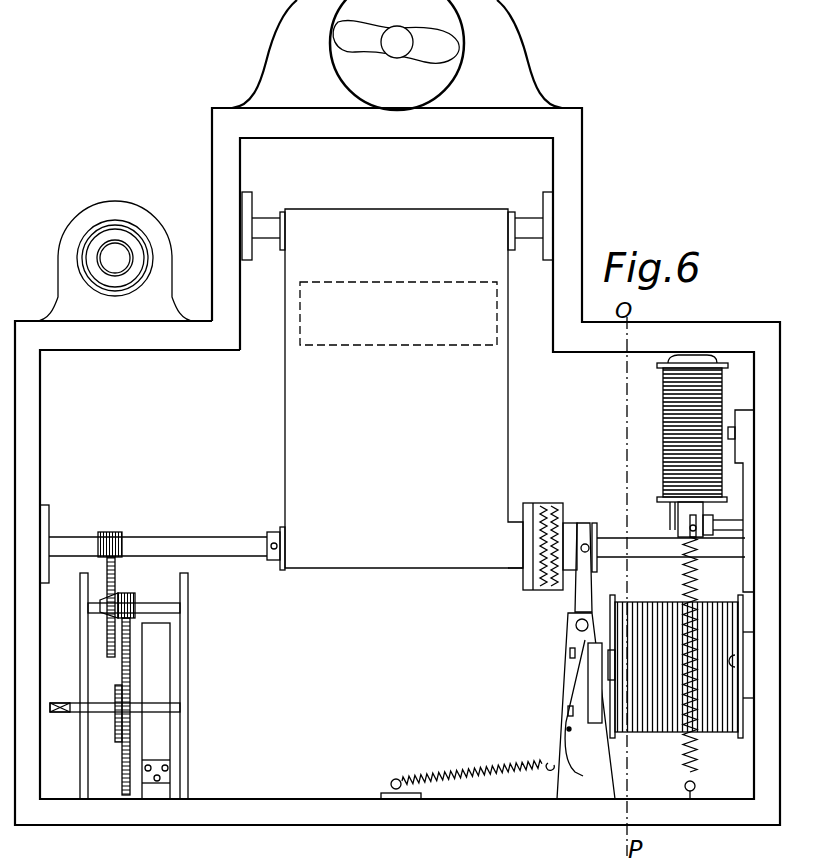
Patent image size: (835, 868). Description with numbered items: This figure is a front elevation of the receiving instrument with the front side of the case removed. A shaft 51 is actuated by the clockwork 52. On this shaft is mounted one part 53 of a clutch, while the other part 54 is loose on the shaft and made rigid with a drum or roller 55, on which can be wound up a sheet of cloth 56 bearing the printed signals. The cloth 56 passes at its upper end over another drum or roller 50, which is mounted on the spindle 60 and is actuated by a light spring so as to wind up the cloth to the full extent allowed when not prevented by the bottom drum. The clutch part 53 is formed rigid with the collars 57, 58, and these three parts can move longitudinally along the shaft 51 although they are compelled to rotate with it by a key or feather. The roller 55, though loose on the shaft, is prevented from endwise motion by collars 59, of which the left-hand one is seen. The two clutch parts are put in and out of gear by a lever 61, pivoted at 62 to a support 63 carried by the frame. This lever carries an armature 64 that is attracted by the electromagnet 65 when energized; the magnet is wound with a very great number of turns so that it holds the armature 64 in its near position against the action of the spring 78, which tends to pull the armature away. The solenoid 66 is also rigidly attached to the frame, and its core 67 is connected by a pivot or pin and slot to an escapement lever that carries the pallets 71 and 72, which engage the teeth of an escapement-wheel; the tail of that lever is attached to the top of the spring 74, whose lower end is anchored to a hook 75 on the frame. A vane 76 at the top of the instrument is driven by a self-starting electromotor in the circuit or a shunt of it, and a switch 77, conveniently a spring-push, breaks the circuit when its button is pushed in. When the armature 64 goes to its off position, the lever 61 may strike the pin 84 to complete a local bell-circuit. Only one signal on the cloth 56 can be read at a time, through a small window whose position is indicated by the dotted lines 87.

The upper drum or roller 50 is at (286, 232).
The shaft 51 is at (220, 546).
The clockwork 52 is at (125, 598).
The clutch part 53 is at (557, 506).
The clutch part 54 is at (540, 506).
The drum or roller 55 is at (520, 566).
The sheet of cloth 56 is at (404, 388).
The collar 57 is at (570, 528).
The collar 58 is at (598, 530).
The collar 59 is at (272, 562).
The spindle 60 is at (262, 232).
The lever 61 is at (580, 590).
The pivot 62 is at (575, 630).
The support 63 is at (586, 707).
The armature 64 is at (593, 675).
The electromagnet 65 is at (681, 678).
The solenoid 66 is at (663, 412).
The core 67 is at (686, 518).
The pallet 71 is at (700, 573).
The pallet 72 is at (711, 516).
The spring 74 is at (700, 742).
The hook 75 is at (700, 791).
The vane 76 is at (452, 50).
The switch 77 is at (118, 256).
The spring 78 is at (492, 767).
The pin 84 is at (565, 730).
The window 87 is at (398, 313).